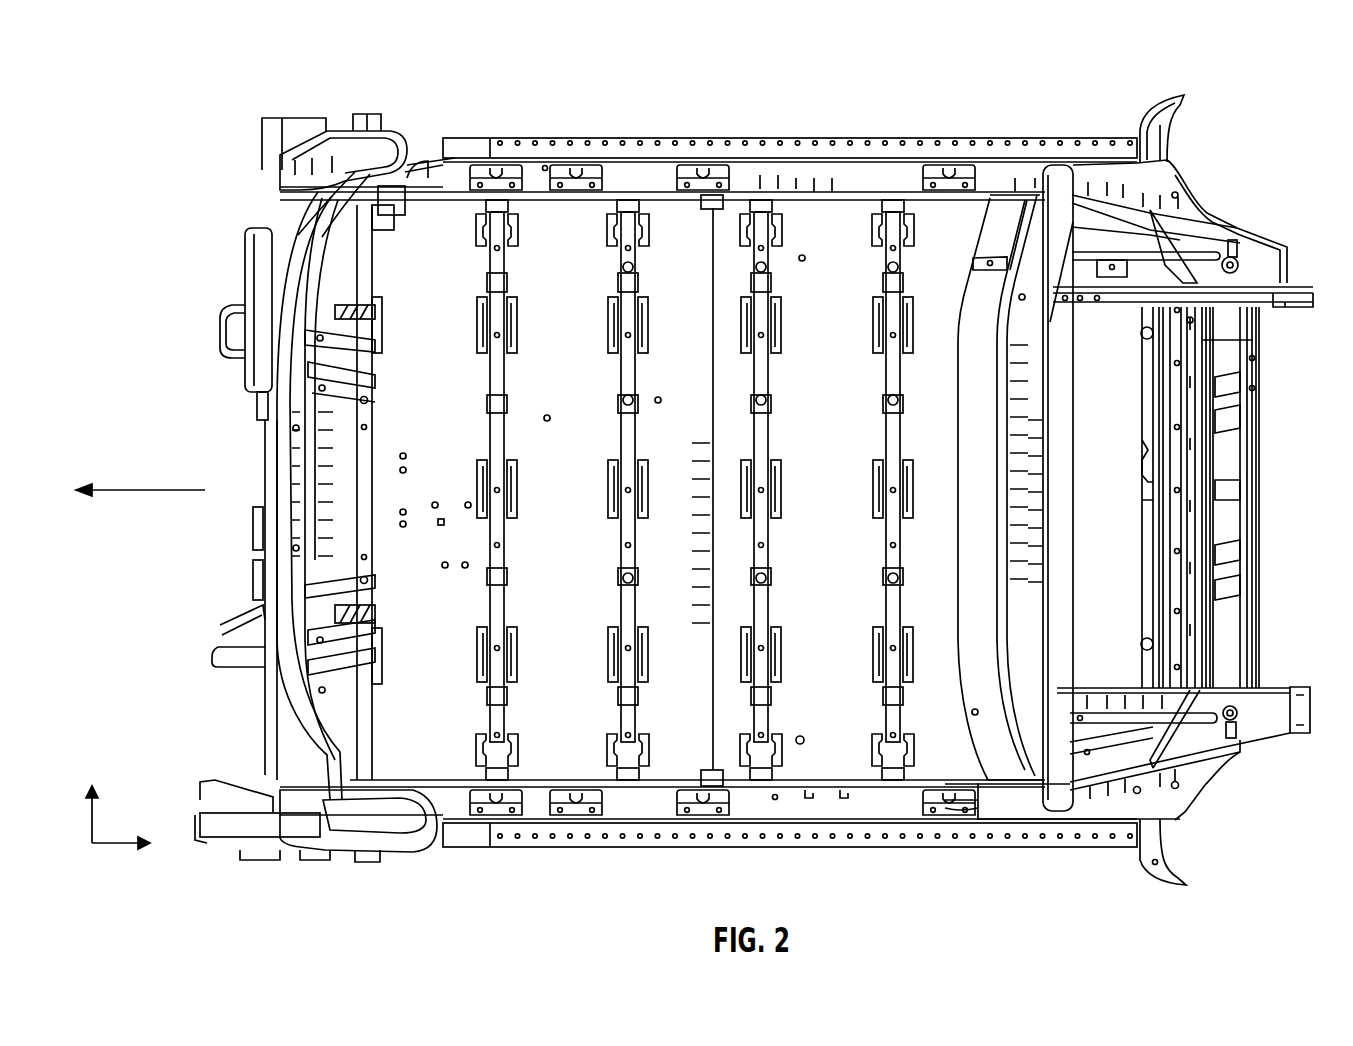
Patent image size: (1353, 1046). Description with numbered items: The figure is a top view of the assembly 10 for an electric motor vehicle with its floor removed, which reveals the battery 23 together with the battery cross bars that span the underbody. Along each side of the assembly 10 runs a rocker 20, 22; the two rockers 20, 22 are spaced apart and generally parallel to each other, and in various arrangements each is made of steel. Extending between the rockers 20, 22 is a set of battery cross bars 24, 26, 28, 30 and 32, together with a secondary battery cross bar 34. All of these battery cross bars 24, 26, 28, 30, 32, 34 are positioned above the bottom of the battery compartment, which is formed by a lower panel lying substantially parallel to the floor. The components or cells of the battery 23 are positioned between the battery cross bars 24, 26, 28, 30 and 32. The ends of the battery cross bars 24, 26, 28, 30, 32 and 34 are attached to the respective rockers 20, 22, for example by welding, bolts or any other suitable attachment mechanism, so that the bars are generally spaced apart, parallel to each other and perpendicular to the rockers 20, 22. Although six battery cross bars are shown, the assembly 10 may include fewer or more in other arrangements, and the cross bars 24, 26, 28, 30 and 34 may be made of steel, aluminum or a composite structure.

The assembly 10 is at (262, 80).
The rocker 20 is at (920, 815).
The rocker 22 is at (890, 170).
The battery 23 is at (565, 228).
The battery cross bar 24 is at (362, 724).
The battery cross bar 26 is at (493, 780).
The battery cross bar 28 is at (628, 780).
The battery cross bar 30 is at (758, 780).
The battery cross bar 32 is at (890, 780).
The secondary battery cross bar 34 is at (1178, 373).